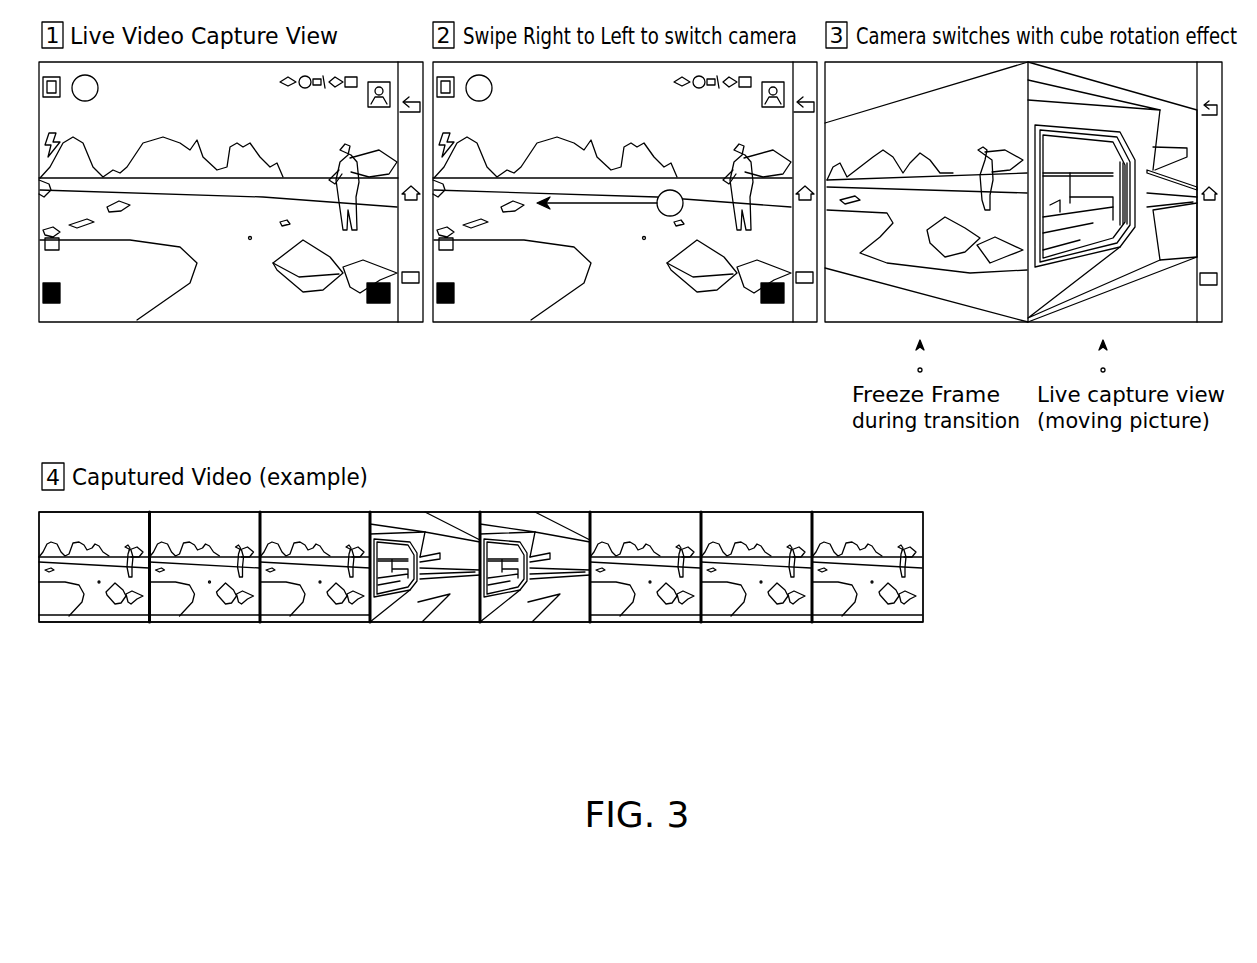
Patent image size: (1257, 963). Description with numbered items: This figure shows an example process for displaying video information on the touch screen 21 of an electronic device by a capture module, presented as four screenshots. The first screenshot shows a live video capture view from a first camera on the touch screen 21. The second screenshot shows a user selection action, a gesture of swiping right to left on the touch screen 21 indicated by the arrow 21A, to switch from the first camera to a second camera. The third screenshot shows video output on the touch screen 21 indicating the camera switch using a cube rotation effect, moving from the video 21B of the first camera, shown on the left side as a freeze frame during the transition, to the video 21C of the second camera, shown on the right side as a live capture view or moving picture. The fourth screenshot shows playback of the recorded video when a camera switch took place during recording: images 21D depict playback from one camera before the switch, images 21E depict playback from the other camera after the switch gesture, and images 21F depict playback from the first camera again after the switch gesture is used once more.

The touch screen 21 is at (193, 322).
The arrow 21A is at (600, 197).
The video from the first camera 21B is at (898, 100).
The video from the second camera 21C is at (1137, 97).
The images 21D is at (370, 703).
The images 21E is at (590, 703).
The images 21F is at (922, 703).